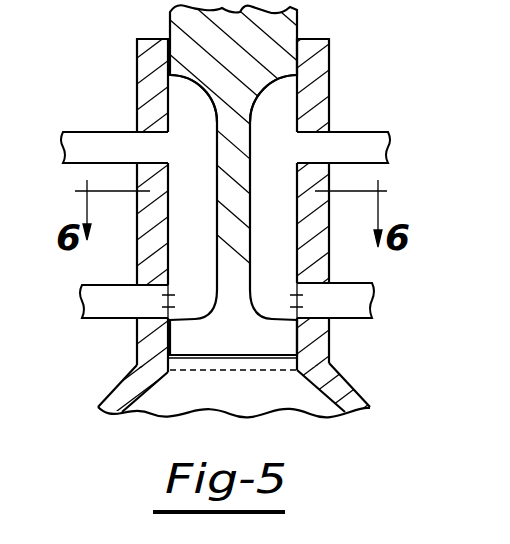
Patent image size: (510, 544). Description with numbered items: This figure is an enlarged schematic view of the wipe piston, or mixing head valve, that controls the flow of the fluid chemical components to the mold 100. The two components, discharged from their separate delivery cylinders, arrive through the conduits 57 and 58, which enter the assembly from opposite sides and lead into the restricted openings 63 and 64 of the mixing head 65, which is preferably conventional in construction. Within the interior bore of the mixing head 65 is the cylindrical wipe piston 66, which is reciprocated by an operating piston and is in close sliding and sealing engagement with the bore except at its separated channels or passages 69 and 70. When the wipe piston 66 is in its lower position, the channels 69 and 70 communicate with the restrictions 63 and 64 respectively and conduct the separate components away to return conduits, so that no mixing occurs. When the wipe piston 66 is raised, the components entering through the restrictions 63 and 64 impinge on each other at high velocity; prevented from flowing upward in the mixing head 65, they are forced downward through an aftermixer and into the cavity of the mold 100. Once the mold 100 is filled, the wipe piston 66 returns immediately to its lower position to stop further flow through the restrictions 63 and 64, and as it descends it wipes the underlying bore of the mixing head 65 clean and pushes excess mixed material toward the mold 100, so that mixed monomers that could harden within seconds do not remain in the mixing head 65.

The conduit 57 is at (358, 320).
The conduit 58 is at (97, 318).
The restricted opening 63 is at (294, 300).
The restricted opening 64 is at (172, 299).
The mixing head 65 is at (330, 117).
The wipe piston 66 is at (247, 219).
The channel 69 is at (278, 100).
The channel 70 is at (178, 213).
The mold 100 is at (353, 392).